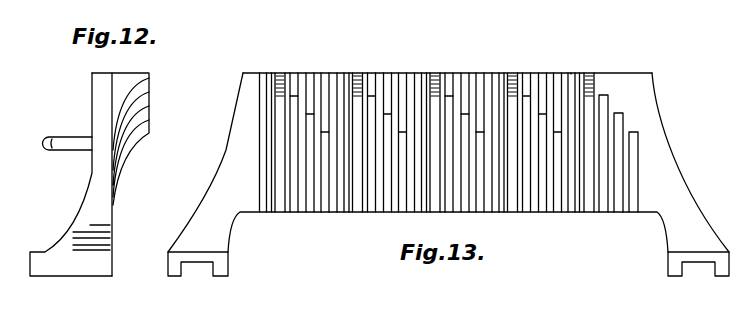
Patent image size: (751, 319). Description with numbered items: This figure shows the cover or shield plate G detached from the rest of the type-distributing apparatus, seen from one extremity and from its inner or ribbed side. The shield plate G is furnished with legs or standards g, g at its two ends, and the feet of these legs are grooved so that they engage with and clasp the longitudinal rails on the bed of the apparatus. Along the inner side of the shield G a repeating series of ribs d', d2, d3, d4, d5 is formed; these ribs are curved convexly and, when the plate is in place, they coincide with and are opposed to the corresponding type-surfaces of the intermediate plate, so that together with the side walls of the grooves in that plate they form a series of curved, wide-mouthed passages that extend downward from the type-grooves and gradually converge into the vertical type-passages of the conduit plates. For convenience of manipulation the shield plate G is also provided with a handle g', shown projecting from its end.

In FIG. 12, the cover or shield plate G is at (89, 163).
In FIG. 13, the cover or shield plate G is at (448, 148).
In FIG. 13, the legs or standards g is at (448, 255).
In FIG. 12, the handle g' is at (68, 135).
In FIG. 13, the rib d' is at (503, 122).
In FIG. 13, the rib d2 is at (316, 70).
In FIG. 13, the rib d3 is at (300, 69).
In FIG. 13, the rib d4 is at (282, 67).
In FIG. 13, the rib d5 is at (265, 66).